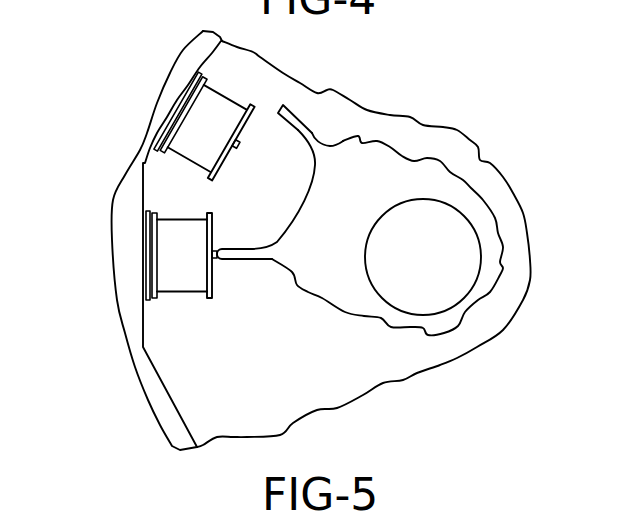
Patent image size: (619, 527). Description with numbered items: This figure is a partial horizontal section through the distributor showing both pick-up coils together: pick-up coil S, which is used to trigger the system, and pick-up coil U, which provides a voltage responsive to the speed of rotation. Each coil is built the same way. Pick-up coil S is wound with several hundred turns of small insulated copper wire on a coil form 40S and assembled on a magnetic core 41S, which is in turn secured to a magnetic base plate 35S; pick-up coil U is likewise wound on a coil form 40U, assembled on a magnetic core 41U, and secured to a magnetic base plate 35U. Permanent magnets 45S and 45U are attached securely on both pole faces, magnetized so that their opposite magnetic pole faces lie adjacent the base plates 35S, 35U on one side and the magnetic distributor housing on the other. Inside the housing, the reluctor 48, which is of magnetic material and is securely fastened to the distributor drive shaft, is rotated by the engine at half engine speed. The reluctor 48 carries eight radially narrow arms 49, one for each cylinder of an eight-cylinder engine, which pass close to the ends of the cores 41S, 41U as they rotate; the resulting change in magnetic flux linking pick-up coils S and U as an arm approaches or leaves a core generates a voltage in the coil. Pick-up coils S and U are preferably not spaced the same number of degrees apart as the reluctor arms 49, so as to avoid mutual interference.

The pick-up coil U is at (150, 90).
The pick-up coil S is at (114, 268).
The magnetic base plate 35U is at (188, 106).
The permanent magnet 45U is at (178, 110).
The magnetic core 41U is at (233, 143).
The coil form 40U is at (192, 165).
The magnetic base plate 35S is at (146, 303).
The permanent magnet 45S is at (145, 282).
The magnetic core 41S is at (213, 254).
The coil form 40S is at (208, 299).
The reluctor 48 is at (455, 193).
The reluctor arms 49 is at (250, 248).